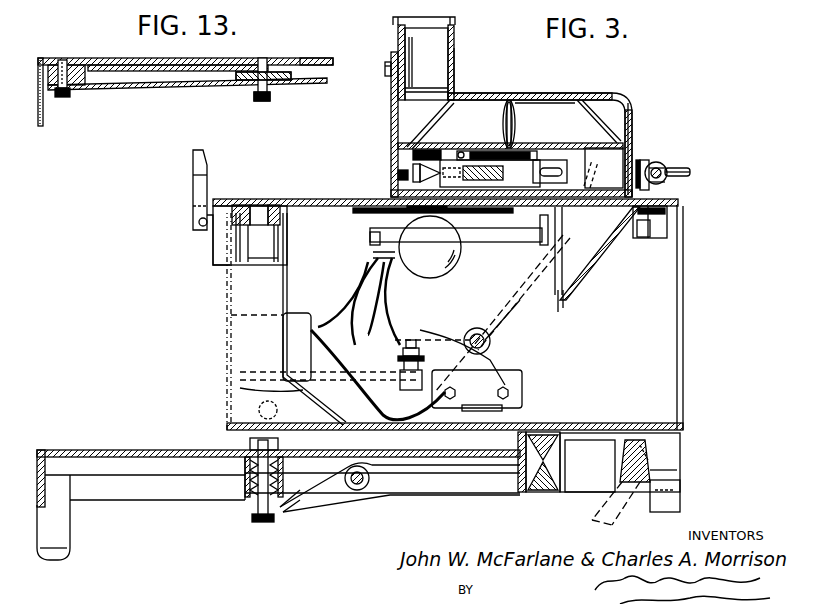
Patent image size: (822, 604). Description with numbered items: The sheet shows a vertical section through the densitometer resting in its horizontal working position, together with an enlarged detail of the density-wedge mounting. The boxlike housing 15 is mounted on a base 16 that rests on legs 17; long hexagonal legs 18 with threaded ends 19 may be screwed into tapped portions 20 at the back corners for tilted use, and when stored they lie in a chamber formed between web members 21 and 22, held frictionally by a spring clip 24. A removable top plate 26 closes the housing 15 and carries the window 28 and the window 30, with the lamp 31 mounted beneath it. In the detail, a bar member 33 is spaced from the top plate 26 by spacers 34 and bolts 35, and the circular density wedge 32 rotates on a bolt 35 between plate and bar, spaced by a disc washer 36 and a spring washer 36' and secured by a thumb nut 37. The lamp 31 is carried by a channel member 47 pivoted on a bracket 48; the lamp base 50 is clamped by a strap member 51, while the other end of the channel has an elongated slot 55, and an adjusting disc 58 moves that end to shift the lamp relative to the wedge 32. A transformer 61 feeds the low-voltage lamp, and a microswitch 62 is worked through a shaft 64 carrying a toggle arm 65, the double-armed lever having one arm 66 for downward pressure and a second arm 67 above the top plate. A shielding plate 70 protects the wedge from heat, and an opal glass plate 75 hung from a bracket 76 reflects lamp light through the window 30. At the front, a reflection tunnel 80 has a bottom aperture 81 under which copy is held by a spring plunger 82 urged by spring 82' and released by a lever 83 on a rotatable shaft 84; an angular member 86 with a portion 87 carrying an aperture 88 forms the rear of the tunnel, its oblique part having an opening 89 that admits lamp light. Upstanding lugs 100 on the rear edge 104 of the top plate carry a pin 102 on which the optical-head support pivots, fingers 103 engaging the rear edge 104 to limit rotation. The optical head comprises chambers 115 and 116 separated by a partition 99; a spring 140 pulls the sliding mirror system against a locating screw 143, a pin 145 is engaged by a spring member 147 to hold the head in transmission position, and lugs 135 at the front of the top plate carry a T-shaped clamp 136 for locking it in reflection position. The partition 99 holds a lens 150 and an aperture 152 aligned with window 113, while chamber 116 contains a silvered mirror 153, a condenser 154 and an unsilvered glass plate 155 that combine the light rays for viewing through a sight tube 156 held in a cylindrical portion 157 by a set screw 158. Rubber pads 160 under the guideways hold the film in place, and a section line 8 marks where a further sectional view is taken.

In FIG. 3, the section line 8- 8 is at (653, 152).
In FIG. 3, the boxlike housing 15 is at (684, 340).
In FIG. 3, the base 16 is at (86, 452).
In FIG. 3, the legs 17 is at (70, 540).
In FIG. 3, the long hexagonal legs 18 is at (540, 490).
In FIG. 3, the threaded ends 19 is at (650, 460).
In FIG. 3, the tapped portions 20 is at (663, 468).
In FIG. 3, the web member 21 is at (518, 466).
In FIG. 3, the web member 22 is at (562, 453).
In FIG. 3, the spring clip 24 is at (522, 494).
In FIG. 13, the top plate 26 is at (318, 58).
In FIG. 3, the top plate 26 is at (283, 199).
In FIG. 3, the window 28 is at (247, 202).
In FIG. 3, the window 30 is at (618, 197).
In FIG. 3, the lamp 31 is at (448, 270).
In FIG. 13, the circular density wedge 32 is at (105, 58).
In FIG. 3, the circular density wedge 32 is at (362, 214).
In FIG. 13, the bar member 33 is at (172, 88).
In FIG. 13, the spacers 34 is at (52, 62).
In FIG. 13, the bolts 35 is at (64, 97).
In FIG. 13, the disc washer 36 is at (253, 102).
In FIG. 13, the spring washer 36' is at (284, 89).
In FIG. 13, the thumb nut 37 is at (268, 100).
In FIG. 3, the channel member 47 is at (505, 237).
In FIG. 3, the bracket 48 is at (528, 293).
In FIG. 3, the lamp base 50 is at (382, 270).
In FIG. 3, the strap member 51 is at (373, 255).
In FIG. 3, the elongated slot 55 is at (645, 237).
In FIG. 3, the adjusting disc 58 is at (660, 214).
In FIG. 3, the transformer 61 is at (300, 325).
In FIG. 3, the microswitch 62 is at (517, 381).
In FIG. 3, the rotating shaft 64 is at (491, 340).
In FIG. 3, the toggle arm 65 is at (403, 362).
In FIG. 3, the arm 66 is at (248, 374).
In FIG. 3, the second arm 67 is at (497, 315).
In FIG. 3, the metal shielding plate 70 is at (478, 225).
In FIG. 3, the opal glass plate 75 is at (592, 273).
In FIG. 3, the bracket 76 is at (562, 308).
In FIG. 3, the reflection tunnel 80 is at (228, 303).
In FIG. 3, the aperture 81 is at (245, 426).
In FIG. 3, the spring plunger 82 is at (227, 476).
In FIG. 3, the spring 82' is at (235, 494).
In FIG. 3, the lever 83 is at (307, 503).
In FIG. 3, the rotatable shaft 84 is at (360, 490).
In FIG. 3, the angular member 86 is at (284, 297).
In FIG. 3, the portion 87 is at (215, 265).
In FIG. 3, the aperture 88 is at (265, 260).
In FIG. 3, the opening 89 is at (245, 390).
In FIG. 3, the partition 99 is at (391, 115).
In FIG. 3, the upstanding lugs 100 is at (672, 173).
In FIG. 3, the pin 102 is at (672, 178).
In FIG. 3, the extending fingers 103 is at (670, 175).
In FIG. 3, the rear edge 104 is at (675, 197).
In FIG. 3, the window 113 is at (563, 212).
In FIG. 3, the chamber 115 is at (637, 168).
In FIG. 3, the chamber 116 is at (633, 100).
In FIG. 3, the lugs 135 is at (200, 227).
In FIG. 3, the T shaped clamp 136 is at (195, 191).
In FIG. 3, the spring 140 is at (513, 148).
In FIG. 3, the locating screw 143 is at (392, 174).
In FIG. 3, the pin 145 is at (582, 186).
In FIG. 3, the spring member 147 is at (647, 153).
In FIG. 3, the lens 150 is at (392, 151).
In FIG. 3, the aperture 152 is at (632, 116).
In FIG. 3, the silvered mirror 153 is at (602, 100).
In FIG. 3, the condenser 154 is at (510, 110).
In FIG. 3, the unsilvered glass plate 155 is at (445, 120).
In FIG. 3, the sight tube 156 is at (455, 36).
In FIG. 3, the cylindrical portion 157 is at (456, 76).
In FIG. 3, the set screw 158 is at (389, 75).
In FIG. 3, the rubber pads 160 is at (391, 188).